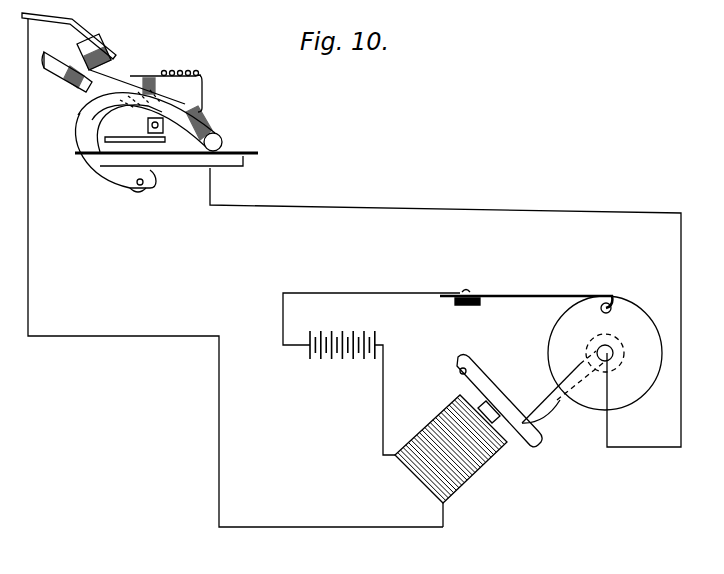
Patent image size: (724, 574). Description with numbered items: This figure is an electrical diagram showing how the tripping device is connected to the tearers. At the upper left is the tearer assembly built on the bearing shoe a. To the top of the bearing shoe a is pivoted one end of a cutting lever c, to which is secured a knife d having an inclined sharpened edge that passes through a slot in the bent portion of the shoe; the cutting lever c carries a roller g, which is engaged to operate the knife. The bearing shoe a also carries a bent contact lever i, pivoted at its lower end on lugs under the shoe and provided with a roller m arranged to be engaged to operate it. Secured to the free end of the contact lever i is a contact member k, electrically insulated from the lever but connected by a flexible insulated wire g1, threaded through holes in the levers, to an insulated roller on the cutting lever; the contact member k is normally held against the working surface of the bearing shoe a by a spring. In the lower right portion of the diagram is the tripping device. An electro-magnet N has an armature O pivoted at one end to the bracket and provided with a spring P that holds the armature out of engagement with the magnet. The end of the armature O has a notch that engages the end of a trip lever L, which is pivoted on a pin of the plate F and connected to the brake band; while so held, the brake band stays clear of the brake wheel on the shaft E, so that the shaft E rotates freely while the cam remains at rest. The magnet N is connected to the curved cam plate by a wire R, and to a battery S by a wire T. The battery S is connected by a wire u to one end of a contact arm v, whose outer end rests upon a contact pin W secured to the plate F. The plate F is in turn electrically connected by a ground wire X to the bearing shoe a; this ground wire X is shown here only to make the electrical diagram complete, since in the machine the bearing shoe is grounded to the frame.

The wire R is at (31, 283).
The ground wire X is at (586, 210).
The wire u is at (345, 292).
The contact arm v is at (516, 295).
The battery S is at (338, 362).
The wire T is at (384, 387).
The electro-magnet N is at (478, 470).
The armature O is at (485, 388).
The trip lever L is at (549, 408).
The plate F is at (635, 393).
The shaft E is at (608, 353).
The contact pin W is at (615, 302).
The spring P is at (98, 27).
The roller g is at (66, 59).
The cutting lever c is at (72, 76).
The flexible insulated wire g1 is at (192, 73).
The roller m is at (149, 78).
The contact member k is at (218, 134).
The contact lever i is at (95, 112).
The knife d is at (105, 123).
The bearing shoe a is at (170, 151).